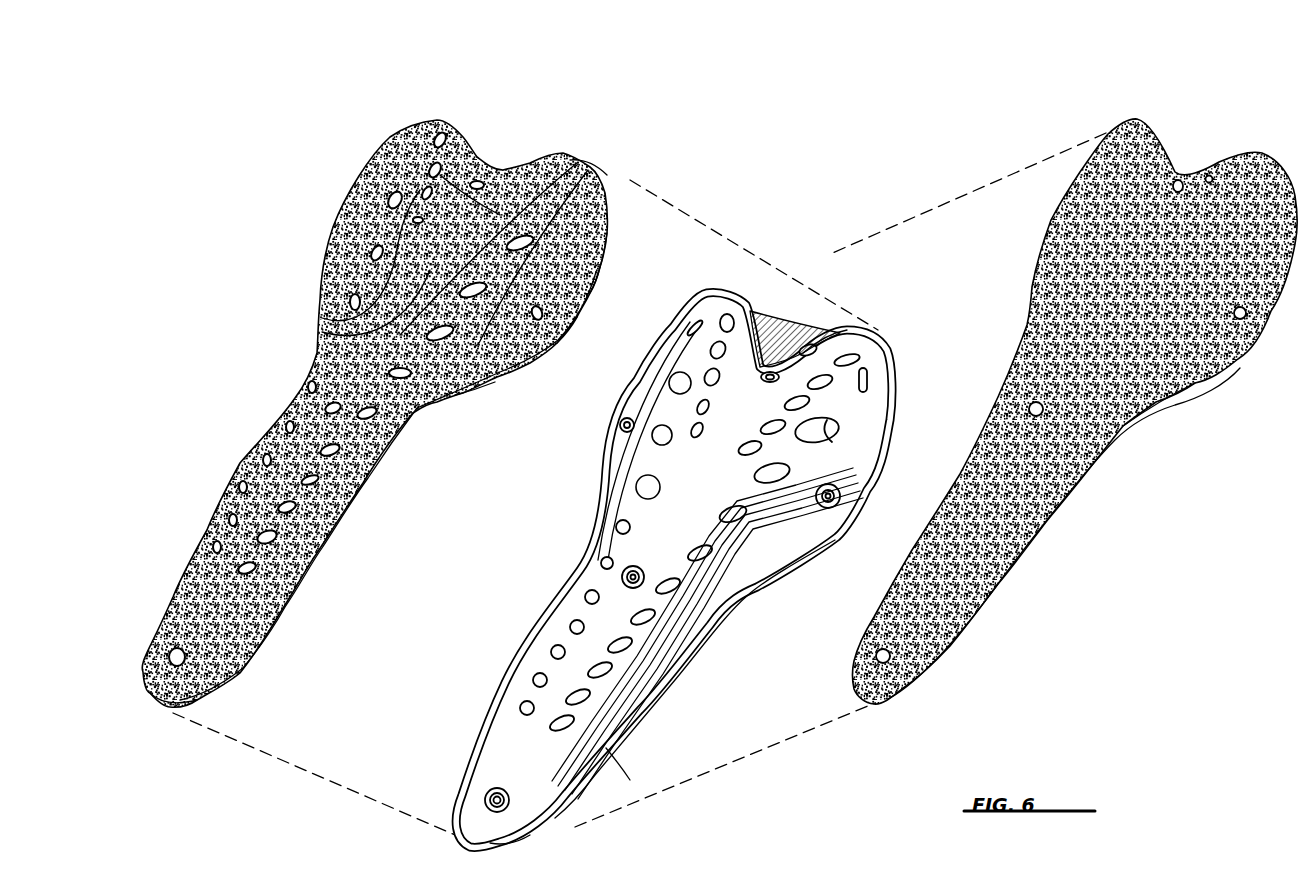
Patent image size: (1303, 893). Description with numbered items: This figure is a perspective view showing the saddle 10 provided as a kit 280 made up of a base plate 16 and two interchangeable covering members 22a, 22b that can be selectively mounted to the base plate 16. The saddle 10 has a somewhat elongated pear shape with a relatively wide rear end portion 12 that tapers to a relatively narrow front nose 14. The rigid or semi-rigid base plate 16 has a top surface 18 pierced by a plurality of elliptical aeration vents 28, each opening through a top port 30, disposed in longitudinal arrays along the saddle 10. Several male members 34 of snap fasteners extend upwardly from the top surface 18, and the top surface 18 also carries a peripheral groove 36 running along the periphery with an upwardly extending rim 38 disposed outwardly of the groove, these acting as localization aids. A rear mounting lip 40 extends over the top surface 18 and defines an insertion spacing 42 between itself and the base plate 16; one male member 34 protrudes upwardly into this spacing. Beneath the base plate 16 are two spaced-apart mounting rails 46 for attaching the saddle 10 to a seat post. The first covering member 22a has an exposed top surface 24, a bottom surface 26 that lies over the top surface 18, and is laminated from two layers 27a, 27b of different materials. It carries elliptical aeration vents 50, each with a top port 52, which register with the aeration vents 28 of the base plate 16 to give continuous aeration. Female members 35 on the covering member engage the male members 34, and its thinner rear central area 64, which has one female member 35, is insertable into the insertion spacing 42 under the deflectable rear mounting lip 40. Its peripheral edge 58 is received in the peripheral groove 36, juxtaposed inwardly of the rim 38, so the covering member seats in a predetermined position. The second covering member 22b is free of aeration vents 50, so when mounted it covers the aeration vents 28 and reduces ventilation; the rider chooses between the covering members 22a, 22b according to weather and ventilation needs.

The saddle 10 is at (205, 350).
The rear end portion 12 is at (607, 175).
The front nose 14 is at (225, 680).
The base plate 16 is at (920, 415).
The top surface 18 is at (850, 455).
The first covering member 22a is at (290, 208).
The second covering member 22b is at (1205, 125).
The top surface 24 is at (598, 258).
The bottom surface 26 is at (470, 410).
The first layer 27a is at (598, 298).
The second layer 27b is at (572, 347).
The aeration vents 28 is at (742, 335).
The top port 30 is at (688, 325).
The male members 34 is at (805, 350).
The female members 35 is at (478, 181).
The peripheral groove 36 is at (605, 738).
The upwardly extending rim 38 is at (592, 772).
The rear mounting lip 40 is at (762, 330).
The insertion spacing 42 is at (836, 347).
The mounting rails 46 is at (700, 625).
The aeration vents 50 is at (398, 195).
The top port 52 is at (328, 335).
The peripheral edge 58 is at (335, 525).
The rear central area 64 is at (505, 165).
The kit 280 is at (905, 160).